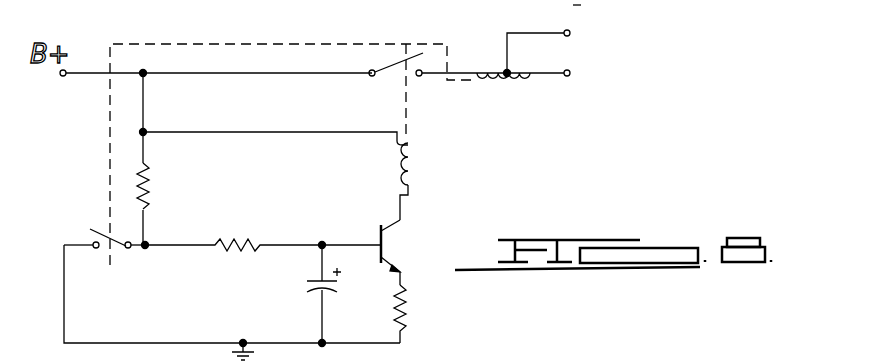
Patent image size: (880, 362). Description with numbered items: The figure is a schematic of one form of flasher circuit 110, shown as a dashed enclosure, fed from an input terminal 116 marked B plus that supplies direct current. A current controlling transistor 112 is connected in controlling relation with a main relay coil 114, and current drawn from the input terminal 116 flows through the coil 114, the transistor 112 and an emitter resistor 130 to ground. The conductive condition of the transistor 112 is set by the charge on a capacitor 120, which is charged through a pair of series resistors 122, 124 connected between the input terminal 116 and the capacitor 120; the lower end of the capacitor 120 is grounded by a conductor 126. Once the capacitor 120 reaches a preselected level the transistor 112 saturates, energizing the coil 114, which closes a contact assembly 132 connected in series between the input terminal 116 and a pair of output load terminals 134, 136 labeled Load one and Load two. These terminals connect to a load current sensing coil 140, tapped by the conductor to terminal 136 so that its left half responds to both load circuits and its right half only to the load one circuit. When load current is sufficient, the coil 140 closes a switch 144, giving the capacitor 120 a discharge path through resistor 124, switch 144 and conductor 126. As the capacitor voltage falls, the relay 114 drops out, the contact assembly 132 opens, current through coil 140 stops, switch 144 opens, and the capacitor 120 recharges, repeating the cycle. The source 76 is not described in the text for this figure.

The power source 76 is at (506, 7).
The flasher circuit 110 is at (290, 201).
The current controlling transistor 112 is at (392, 224).
The main relay coil 114 is at (412, 176).
The input terminal 116 is at (62, 79).
The capacitor 120 is at (307, 285).
The resistor 122 is at (153, 183).
The resistor 124 is at (212, 265).
The conductor 126 is at (165, 343).
The emitter resistor 130 is at (408, 316).
The contact assembly 132 is at (410, 32).
The output load terminal 134 is at (565, 78).
The output load terminal 136 is at (567, 27).
The load current sensing coil 140 is at (507, 85).
The switch 144 is at (130, 258).